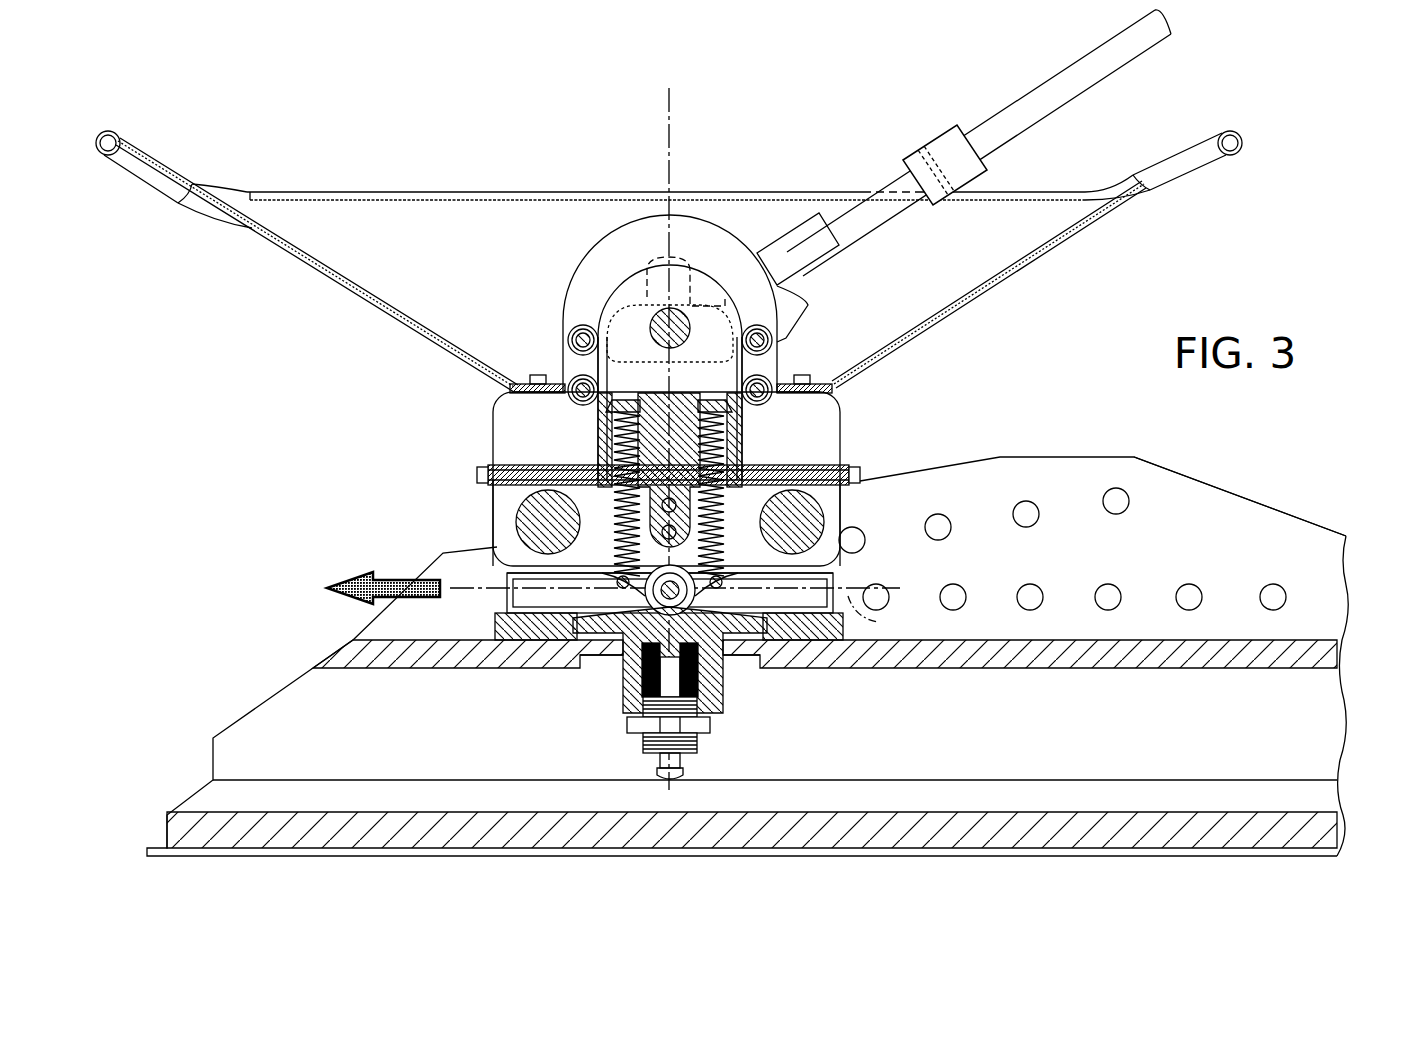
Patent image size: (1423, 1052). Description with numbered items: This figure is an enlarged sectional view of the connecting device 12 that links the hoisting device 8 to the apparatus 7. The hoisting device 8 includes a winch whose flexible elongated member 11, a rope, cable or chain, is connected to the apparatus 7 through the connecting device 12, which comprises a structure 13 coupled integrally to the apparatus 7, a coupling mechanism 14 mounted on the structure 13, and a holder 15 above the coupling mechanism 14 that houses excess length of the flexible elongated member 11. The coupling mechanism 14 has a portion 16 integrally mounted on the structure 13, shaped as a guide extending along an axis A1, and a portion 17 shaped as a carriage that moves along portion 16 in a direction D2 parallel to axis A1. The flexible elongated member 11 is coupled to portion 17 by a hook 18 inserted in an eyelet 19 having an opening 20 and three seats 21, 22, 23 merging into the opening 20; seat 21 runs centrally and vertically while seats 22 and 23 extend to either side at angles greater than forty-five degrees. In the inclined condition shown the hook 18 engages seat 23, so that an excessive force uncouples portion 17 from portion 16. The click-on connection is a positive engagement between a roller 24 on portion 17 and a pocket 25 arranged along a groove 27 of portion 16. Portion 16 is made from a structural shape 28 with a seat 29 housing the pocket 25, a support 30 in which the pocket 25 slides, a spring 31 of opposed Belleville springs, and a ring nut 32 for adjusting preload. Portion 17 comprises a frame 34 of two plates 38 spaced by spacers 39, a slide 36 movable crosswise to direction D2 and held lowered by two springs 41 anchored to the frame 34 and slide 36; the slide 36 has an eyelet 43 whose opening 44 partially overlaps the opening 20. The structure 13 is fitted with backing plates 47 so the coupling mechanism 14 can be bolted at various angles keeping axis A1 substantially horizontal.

The apparatus 7 is at (1263, 862).
The hoisting device 8 is at (1011, 143).
The flexible elongated member 11 is at (1000, 99).
The connecting device 12 is at (333, 418).
The structure 13 is at (1333, 544).
The coupling mechanism 14 is at (857, 408).
The holder 15 is at (1074, 243).
The portion 16 is at (487, 618).
The portion 17 is at (484, 435).
The hook 18 is at (655, 322).
The eyelet 19 is at (697, 275).
The opening 20 is at (716, 330).
The seat 21 is at (661, 275).
The seat 22 is at (613, 310).
The seat 23 is at (742, 288).
The roller 24 is at (725, 598).
The pocket 25 is at (620, 606).
The groove 27 is at (812, 608).
The structural shape 28 is at (805, 636).
The seat 29 is at (600, 650).
The support 30 is at (622, 663).
The spring 31 is at (703, 676).
The ring nut 32 is at (645, 743).
The frame 34 is at (486, 502).
The slide 36 is at (640, 372).
The plates 38 is at (825, 456).
The spacers 39 is at (572, 332).
The springs 41 is at (628, 532).
The eyelet 43 is at (773, 373).
The opening 44 is at (640, 323).
The backing plates 47 is at (1226, 506).
The axis A1 is at (878, 622).
The direction D2 is at (402, 580).